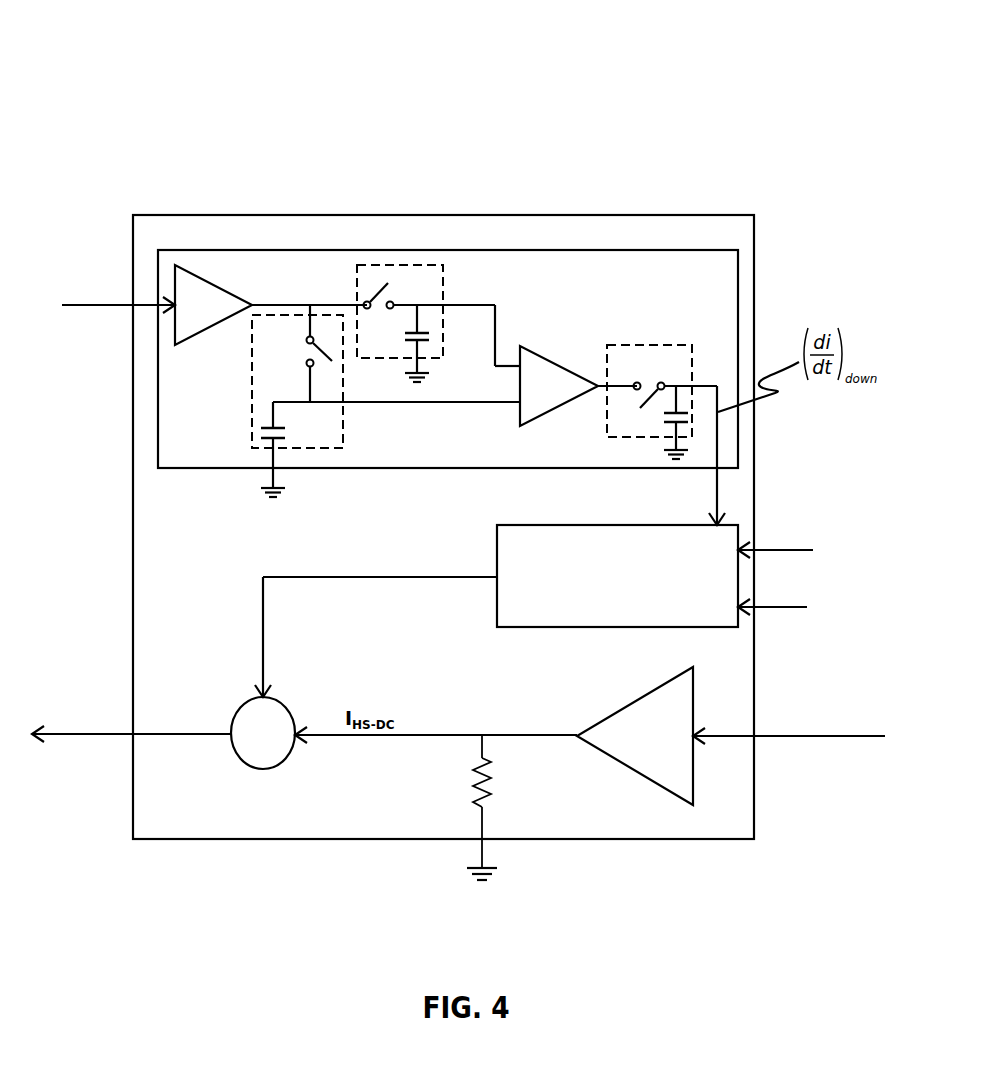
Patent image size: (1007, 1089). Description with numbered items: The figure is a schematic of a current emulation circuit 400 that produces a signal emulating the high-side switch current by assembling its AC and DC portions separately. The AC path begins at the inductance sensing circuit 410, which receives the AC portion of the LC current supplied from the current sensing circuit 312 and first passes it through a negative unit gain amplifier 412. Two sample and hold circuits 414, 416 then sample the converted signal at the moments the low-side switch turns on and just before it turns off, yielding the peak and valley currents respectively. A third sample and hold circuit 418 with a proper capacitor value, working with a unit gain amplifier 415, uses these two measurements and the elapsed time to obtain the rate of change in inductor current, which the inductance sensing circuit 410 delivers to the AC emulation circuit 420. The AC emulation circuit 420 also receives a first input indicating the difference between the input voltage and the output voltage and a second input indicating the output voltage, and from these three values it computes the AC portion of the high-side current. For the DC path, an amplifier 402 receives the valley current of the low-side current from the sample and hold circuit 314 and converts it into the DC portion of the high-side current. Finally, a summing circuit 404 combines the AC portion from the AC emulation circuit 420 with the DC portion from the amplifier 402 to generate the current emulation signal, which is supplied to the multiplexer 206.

The current emulation circuit 400 is at (98, 53).
The inductance sensing circuit 410 is at (666, 296).
The negative unit gain amplifier 412 is at (213, 316).
The sample and hold circuit 414 is at (296, 339).
The unit gain amplifier 415 is at (566, 396).
The sample and hold circuit 416 is at (432, 294).
The third sample and hold circuit 418 is at (658, 366).
The AC emulation circuit 420 is at (666, 583).
The amplifier 402 is at (629, 746).
The summing circuit 404 is at (247, 745).
The current sensing circuit 312 is at (97, 325).
The sample and hold circuit 314 is at (789, 759).
The multiplexer 206 is at (118, 739).